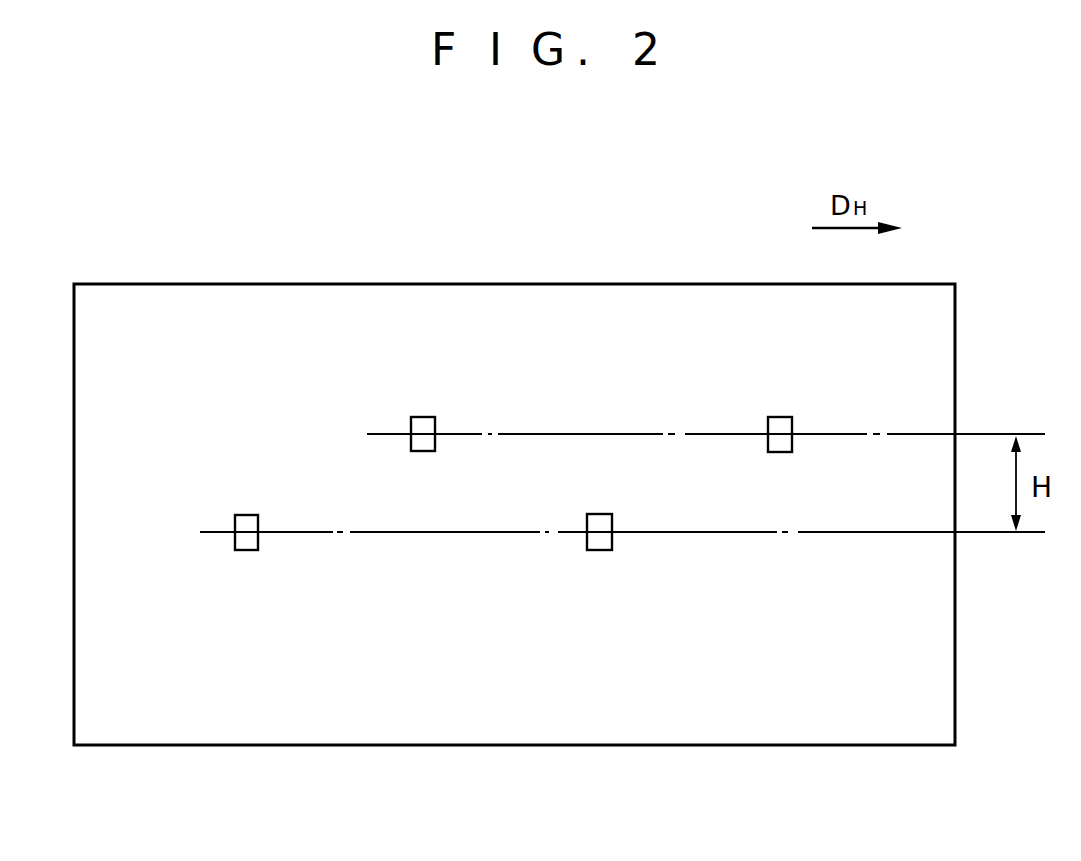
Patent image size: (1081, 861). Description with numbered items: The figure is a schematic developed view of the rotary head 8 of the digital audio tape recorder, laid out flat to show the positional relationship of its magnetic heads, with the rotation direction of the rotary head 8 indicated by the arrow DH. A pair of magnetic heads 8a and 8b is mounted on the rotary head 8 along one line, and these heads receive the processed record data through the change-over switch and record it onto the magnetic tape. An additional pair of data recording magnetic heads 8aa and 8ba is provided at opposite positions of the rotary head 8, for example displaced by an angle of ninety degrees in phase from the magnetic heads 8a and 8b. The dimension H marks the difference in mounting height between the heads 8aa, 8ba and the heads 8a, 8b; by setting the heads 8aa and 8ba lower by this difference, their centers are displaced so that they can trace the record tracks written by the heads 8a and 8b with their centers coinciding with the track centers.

The rotary head 8 is at (565, 283).
The magnetic head 8a is at (780, 423).
The magnetic head 8b is at (423, 425).
The data recording magnetic head 8aa is at (600, 548).
The data recording magnetic head 8ba is at (248, 545).